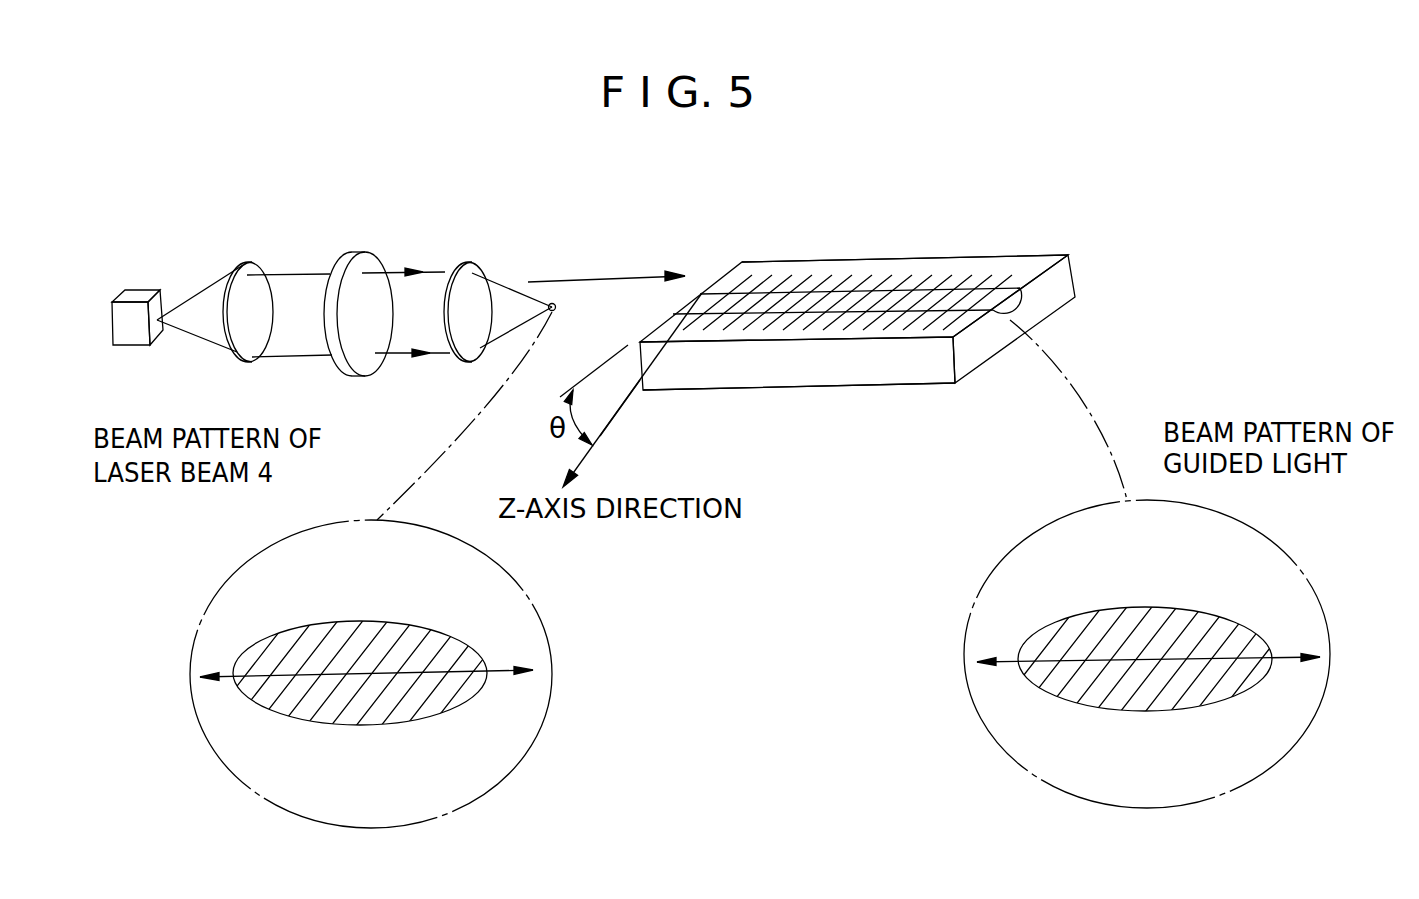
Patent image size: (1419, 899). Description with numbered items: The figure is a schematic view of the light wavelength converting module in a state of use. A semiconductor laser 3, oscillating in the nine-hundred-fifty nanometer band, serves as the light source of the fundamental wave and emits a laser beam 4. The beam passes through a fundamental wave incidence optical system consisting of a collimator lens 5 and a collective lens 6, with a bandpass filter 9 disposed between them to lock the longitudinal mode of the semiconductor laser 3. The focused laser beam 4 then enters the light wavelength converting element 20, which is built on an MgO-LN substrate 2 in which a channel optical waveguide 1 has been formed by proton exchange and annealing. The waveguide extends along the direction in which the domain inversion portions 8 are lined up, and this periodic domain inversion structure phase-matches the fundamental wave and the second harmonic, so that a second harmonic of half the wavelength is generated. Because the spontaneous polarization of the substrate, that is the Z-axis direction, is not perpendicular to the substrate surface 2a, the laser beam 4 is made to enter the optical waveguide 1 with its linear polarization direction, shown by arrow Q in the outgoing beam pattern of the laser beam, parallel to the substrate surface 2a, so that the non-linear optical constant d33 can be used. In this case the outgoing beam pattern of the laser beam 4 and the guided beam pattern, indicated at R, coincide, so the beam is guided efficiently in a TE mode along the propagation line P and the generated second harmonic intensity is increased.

The channel optical waveguide 1 is at (820, 301).
The MgO-LN substrate 2 is at (1087, 277).
The substrate surface 2a is at (1003, 258).
The semiconductor laser 3 is at (125, 290).
The laser beam 4 is at (285, 273).
The collimator lens 5 is at (242, 264).
The collective lens 6 is at (472, 265).
The domain inversion portions 8 is at (922, 277).
The bandpass filter 9 is at (353, 257).
The light wavelength converting element 20 is at (878, 408).
The propagation direction line P is at (622, 408).
The linear polarization direction arrow Q is at (231, 673).
The beam pattern point R is at (1012, 665).